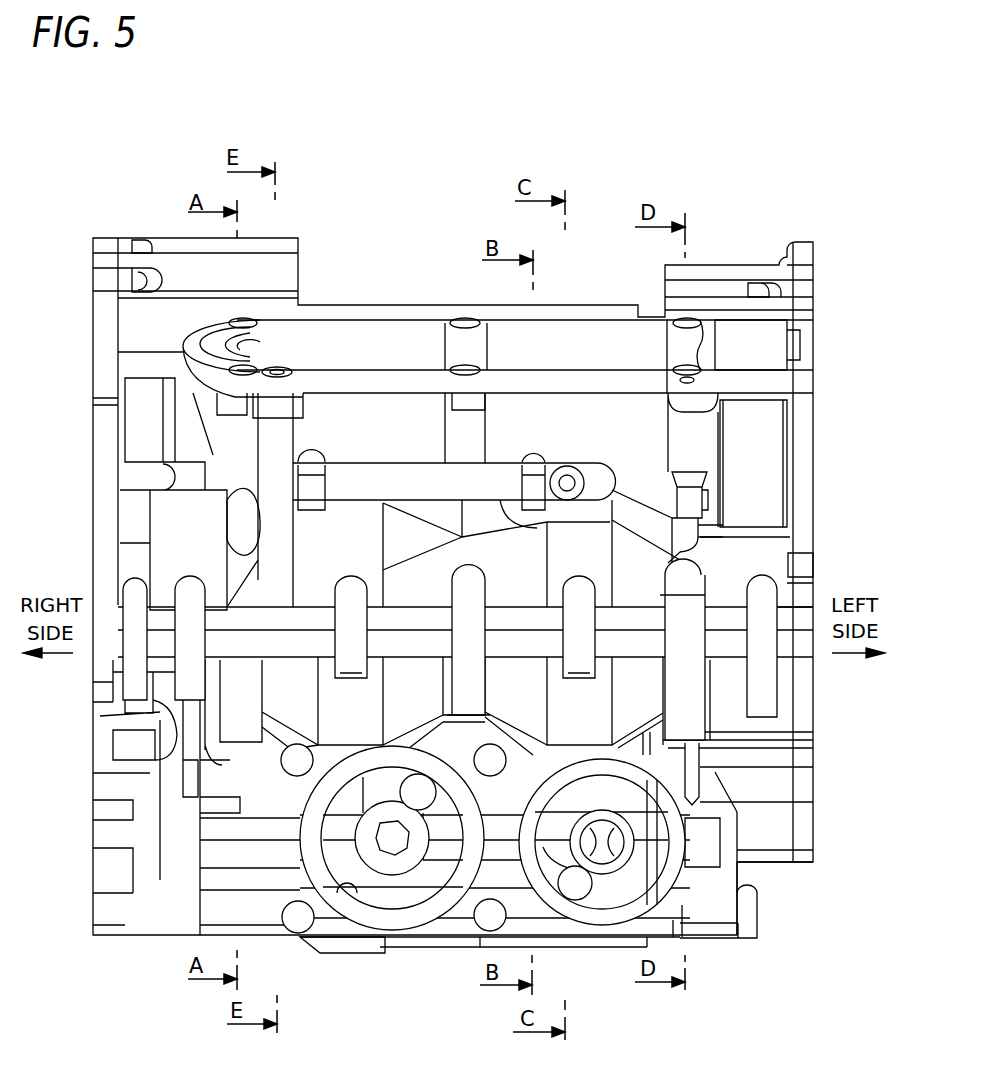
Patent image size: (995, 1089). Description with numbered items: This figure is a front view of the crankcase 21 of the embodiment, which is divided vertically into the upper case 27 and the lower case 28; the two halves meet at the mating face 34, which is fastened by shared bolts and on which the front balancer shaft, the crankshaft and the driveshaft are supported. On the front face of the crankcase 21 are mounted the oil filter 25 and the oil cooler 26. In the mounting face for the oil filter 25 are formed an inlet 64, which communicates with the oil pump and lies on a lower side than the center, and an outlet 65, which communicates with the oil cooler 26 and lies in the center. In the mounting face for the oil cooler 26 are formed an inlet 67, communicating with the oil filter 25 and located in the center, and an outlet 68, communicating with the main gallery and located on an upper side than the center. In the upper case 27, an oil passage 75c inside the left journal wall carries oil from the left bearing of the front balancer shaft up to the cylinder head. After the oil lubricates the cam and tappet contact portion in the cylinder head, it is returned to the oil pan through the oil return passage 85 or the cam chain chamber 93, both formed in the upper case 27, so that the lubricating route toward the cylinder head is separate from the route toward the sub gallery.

The crankcase 21 is at (792, 212).
The oil filter 25 is at (685, 867).
The oil cooler 26 is at (410, 918).
The upper case 27 is at (807, 433).
The lower case 28 is at (798, 710).
The mating face 34 is at (727, 633).
The inlet 64 is at (582, 892).
The outlet 65 is at (615, 822).
The inlet 67 is at (385, 843).
The outlet 68 is at (427, 797).
The oil passage 75c is at (685, 368).
The oil return passage 85 is at (277, 368).
The cam chain chamber 93 is at (765, 332).